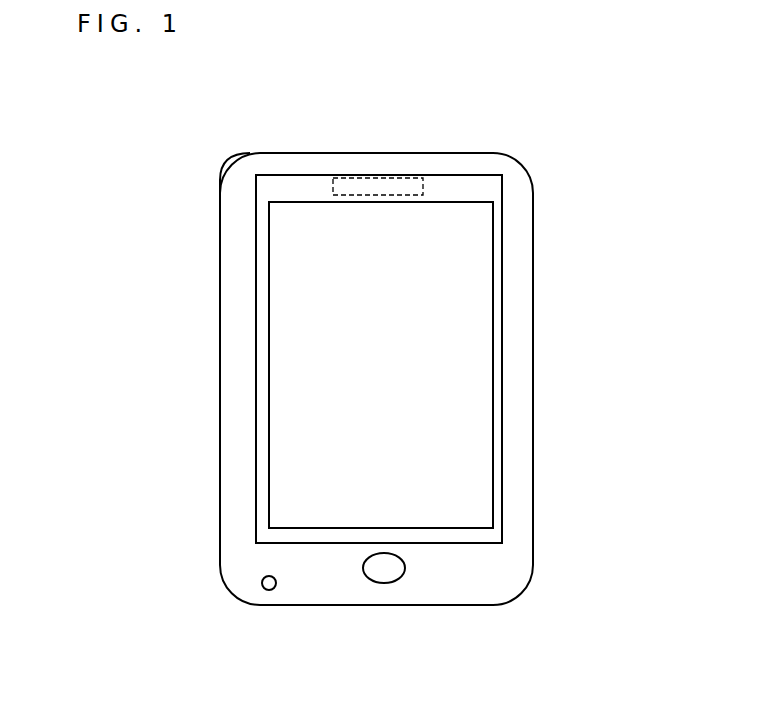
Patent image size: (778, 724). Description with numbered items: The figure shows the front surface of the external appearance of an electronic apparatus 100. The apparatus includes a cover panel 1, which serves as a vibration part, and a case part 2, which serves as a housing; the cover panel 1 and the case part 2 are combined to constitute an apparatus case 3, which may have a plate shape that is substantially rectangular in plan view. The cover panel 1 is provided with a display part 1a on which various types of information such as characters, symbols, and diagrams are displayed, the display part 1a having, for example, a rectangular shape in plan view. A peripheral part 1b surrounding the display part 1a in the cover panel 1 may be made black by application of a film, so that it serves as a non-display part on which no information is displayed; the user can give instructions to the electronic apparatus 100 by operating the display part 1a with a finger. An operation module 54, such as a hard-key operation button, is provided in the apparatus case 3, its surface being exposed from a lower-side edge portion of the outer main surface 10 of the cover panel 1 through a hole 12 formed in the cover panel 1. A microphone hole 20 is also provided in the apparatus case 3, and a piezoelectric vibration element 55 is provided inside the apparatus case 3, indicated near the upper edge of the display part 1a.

The electronic apparatus 100 is at (490, 138).
The cover panel 1 is at (263, 227).
The display part 1a is at (468, 452).
The peripheral part 1b is at (498, 358).
The case part 2 is at (233, 235).
The apparatus case 3 is at (265, 119).
The outer main surface 10 is at (263, 368).
The hole 12 is at (388, 558).
The microphone hole 20 is at (272, 592).
The operation module 54 is at (388, 568).
The piezoelectric vibration element 55 is at (378, 185).